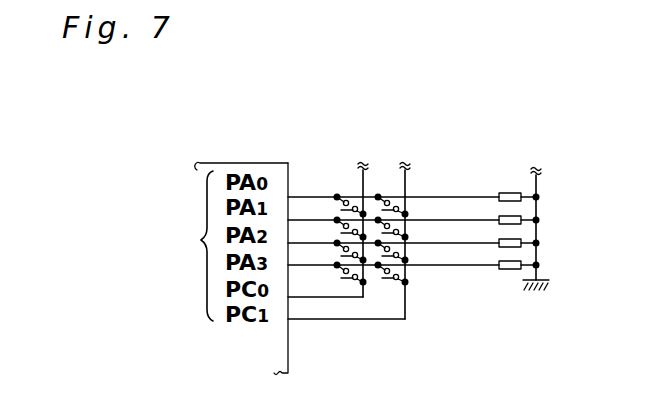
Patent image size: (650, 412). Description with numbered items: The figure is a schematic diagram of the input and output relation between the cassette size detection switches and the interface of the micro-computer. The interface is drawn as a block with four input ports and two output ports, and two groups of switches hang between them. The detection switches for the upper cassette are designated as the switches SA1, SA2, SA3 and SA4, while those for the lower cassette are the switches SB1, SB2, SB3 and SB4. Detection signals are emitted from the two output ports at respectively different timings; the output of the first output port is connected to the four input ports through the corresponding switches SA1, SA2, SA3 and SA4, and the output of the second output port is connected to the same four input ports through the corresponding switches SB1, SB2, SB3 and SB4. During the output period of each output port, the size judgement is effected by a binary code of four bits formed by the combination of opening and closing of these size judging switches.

The detection switch SA1 is at (337, 198).
The detection switch SA2 is at (337, 220).
The detection switch SA3 is at (337, 244).
The detection switch SA4 is at (337, 266).
The detection switch SB1 is at (393, 204).
The detection switch SB2 is at (403, 220).
The detection switch SB3 is at (397, 253).
The detection switch SB4 is at (388, 274).